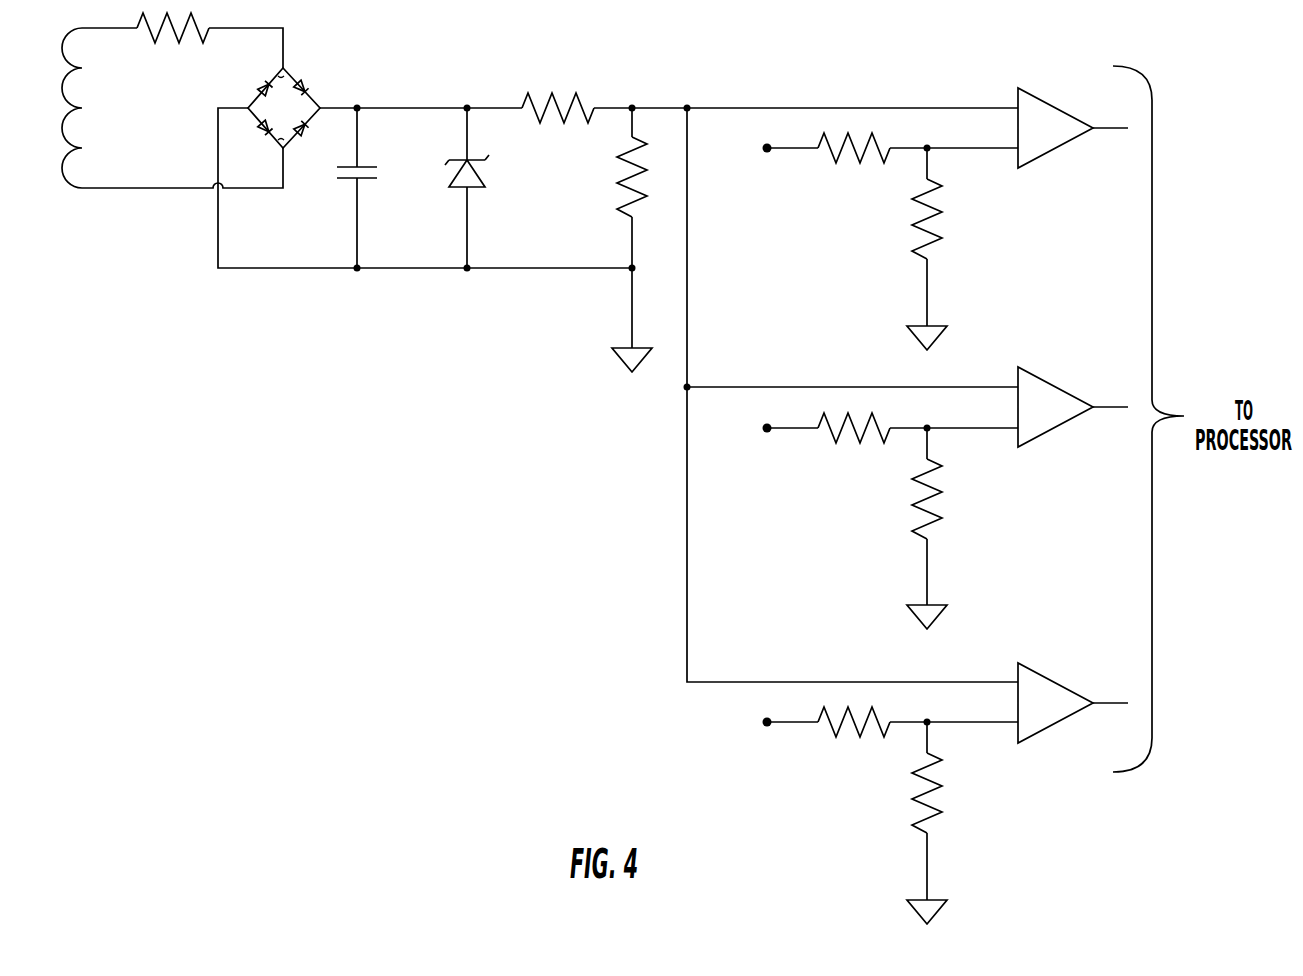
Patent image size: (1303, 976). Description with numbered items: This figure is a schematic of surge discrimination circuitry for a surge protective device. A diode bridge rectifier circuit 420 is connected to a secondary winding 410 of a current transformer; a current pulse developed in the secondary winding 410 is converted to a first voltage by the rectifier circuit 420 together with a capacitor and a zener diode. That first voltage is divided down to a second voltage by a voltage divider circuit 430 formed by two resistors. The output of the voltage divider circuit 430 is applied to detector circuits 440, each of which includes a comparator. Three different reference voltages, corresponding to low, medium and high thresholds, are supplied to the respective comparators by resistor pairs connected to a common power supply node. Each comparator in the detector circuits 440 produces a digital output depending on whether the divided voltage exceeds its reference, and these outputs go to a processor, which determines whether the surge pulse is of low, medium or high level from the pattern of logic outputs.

The secondary winding 410 is at (92, 240).
The diode bridge rectifier circuit 420 is at (315, 63).
The voltage divider circuit 430 is at (608, 68).
The detector circuits 440 is at (1005, 75).